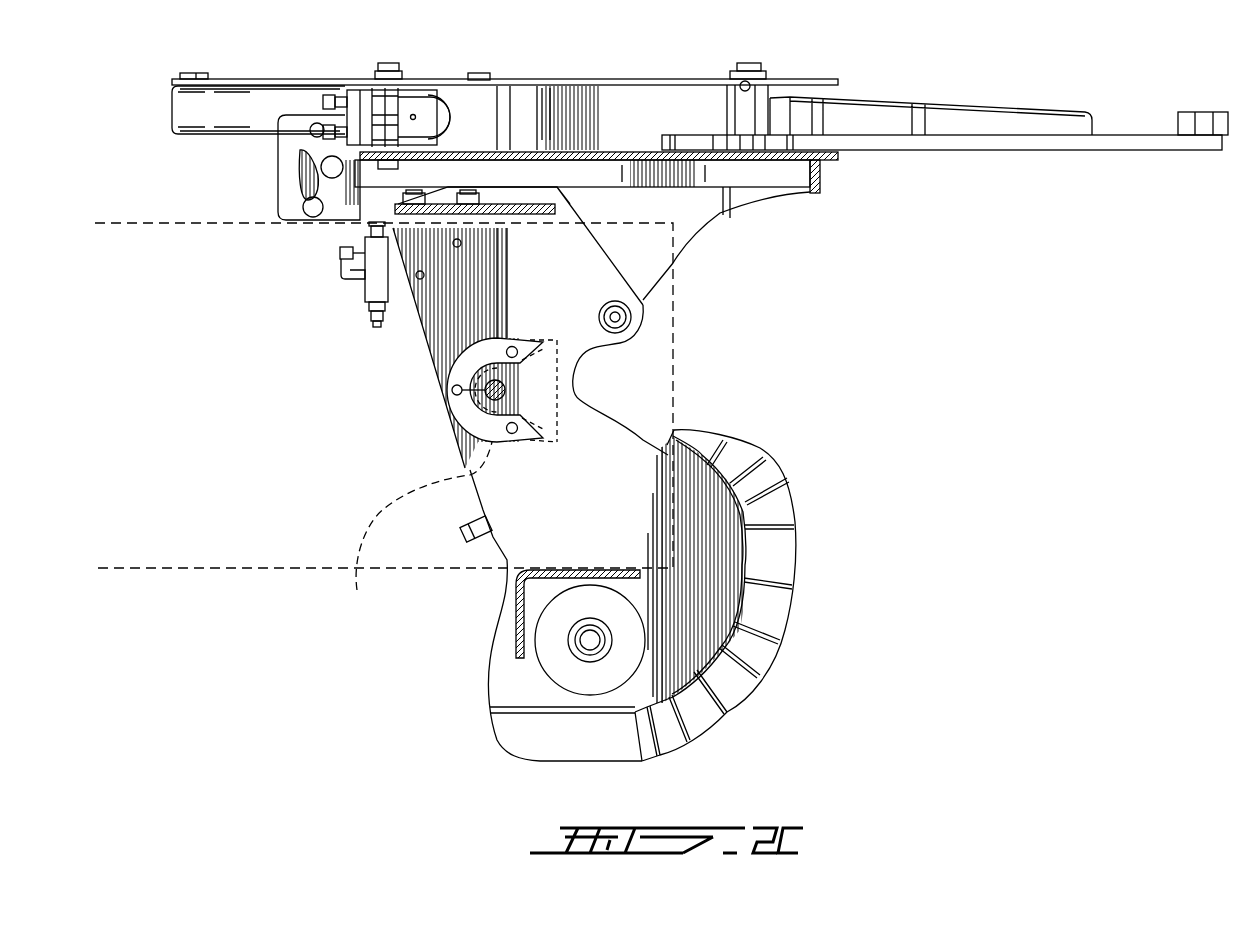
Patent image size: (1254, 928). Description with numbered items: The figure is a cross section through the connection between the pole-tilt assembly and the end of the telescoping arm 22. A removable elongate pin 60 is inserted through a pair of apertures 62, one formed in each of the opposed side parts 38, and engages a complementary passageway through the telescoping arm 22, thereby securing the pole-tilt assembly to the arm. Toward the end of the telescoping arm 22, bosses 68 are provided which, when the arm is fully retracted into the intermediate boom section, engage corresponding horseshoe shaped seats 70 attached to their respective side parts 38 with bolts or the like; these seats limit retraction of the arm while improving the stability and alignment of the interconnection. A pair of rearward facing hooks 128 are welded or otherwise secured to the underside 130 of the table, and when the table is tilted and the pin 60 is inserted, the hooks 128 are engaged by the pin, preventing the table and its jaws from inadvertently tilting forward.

The telescoping arm 22 is at (682, 323).
The side part 38 is at (637, 440).
The removable elongate pin 60 is at (457, 390).
The aperture 62 is at (505, 390).
The boss 68 is at (357, 590).
The horseshoe shaped seat 70 is at (442, 228).
The rearward facing hook 128 is at (320, 184).
The underside of the table 130 is at (662, 160).